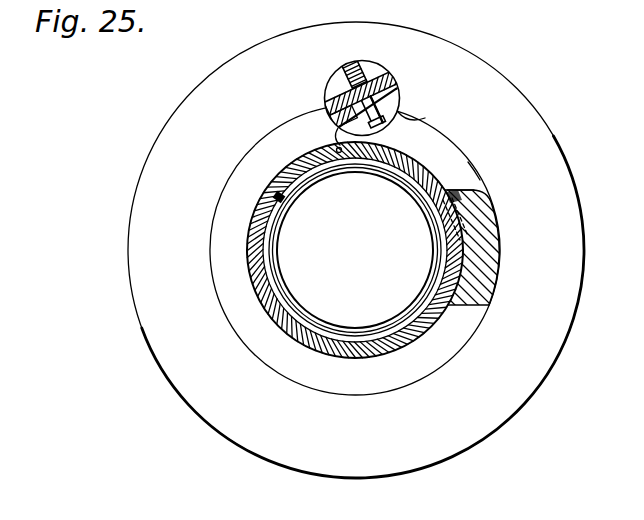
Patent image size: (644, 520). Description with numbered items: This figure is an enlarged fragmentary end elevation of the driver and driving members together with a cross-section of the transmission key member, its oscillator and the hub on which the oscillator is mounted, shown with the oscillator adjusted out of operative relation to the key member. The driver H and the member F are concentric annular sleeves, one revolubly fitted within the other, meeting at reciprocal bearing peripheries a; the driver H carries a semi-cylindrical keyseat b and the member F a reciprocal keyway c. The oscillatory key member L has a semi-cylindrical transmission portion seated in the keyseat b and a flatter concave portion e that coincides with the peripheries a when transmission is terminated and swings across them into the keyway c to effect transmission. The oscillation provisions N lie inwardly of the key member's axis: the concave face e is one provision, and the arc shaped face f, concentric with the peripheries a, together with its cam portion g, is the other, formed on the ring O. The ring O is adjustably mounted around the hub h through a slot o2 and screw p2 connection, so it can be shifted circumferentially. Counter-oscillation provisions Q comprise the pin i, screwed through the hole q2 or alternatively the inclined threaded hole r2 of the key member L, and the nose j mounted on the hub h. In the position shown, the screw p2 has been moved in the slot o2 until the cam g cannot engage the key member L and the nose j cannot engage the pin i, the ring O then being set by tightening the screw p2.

The driver member H is at (356, 250).
The drivingly engageable member F is at (429, 376).
The peripheries a is at (475, 172).
The ring O is at (346, 359).
The slot o2 is at (279, 255).
The hub h is at (318, 326).
The arc shaped face f is at (500, 270).
The cam portion g is at (476, 190).
The nose j is at (465, 241).
The counter-oscillation provisions Q is at (440, 213).
The screw p2 is at (285, 200).
The keyseat b is at (400, 96).
The hole q2 is at (361, 89).
The screw threaded hole r2 is at (344, 116).
The oscillatory key member L is at (363, 92).
The oscillation provisions N is at (366, 108).
The keyway c is at (418, 120).
The concave portion e is at (340, 133).
The pin i is at (337, 150).